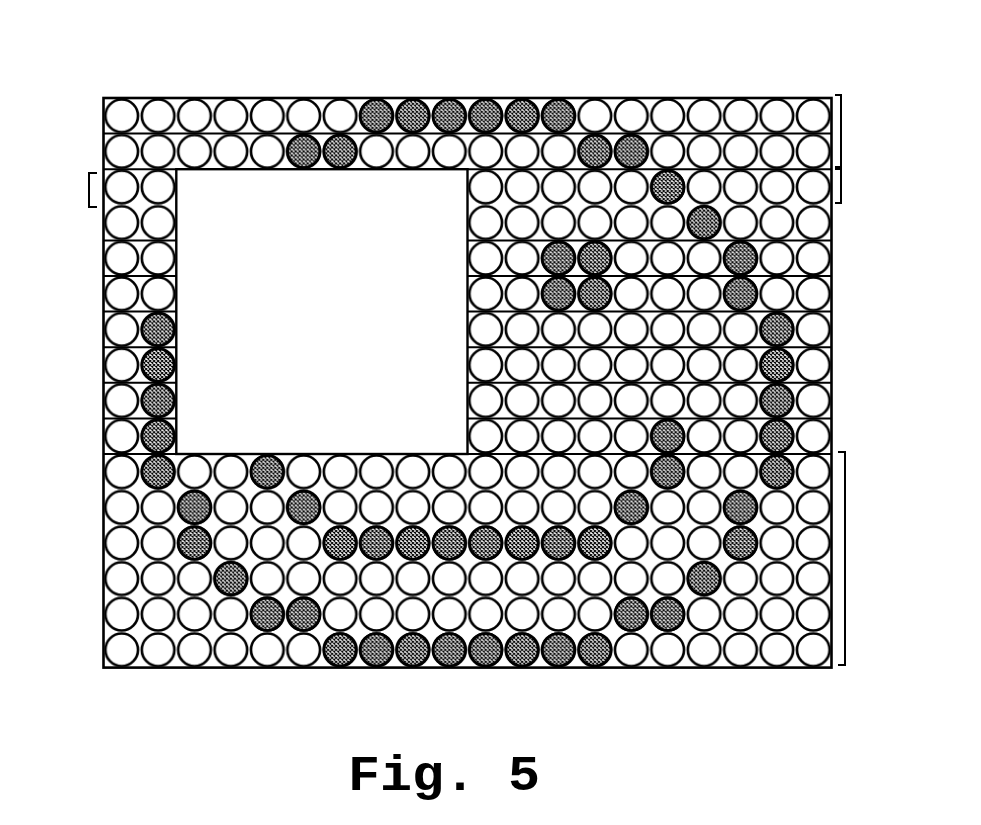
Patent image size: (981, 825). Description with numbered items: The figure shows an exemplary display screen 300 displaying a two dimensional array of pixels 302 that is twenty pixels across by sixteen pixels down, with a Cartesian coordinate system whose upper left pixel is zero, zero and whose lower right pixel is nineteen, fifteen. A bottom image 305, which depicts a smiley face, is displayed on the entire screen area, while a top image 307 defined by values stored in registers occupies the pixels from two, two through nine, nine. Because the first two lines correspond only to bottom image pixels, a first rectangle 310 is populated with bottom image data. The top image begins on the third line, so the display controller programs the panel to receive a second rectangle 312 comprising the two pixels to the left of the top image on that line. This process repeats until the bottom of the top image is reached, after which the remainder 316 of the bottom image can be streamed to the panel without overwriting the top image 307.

The display screen 300 is at (126, 46).
The two dimensional array of pixels 302 is at (837, 313).
The bottom image 305 is at (796, 669).
The top image 307 is at (303, 361).
The first rectangle 310 is at (843, 128).
The second rectangle 312 is at (843, 184).
The remainder of bottom image 316 is at (847, 561).